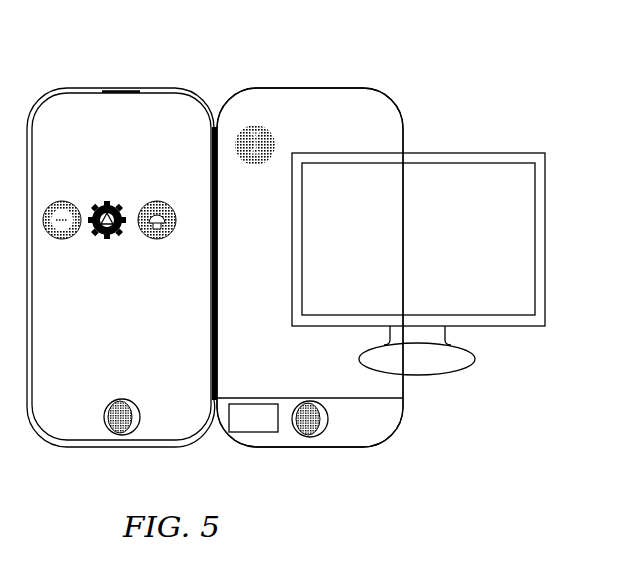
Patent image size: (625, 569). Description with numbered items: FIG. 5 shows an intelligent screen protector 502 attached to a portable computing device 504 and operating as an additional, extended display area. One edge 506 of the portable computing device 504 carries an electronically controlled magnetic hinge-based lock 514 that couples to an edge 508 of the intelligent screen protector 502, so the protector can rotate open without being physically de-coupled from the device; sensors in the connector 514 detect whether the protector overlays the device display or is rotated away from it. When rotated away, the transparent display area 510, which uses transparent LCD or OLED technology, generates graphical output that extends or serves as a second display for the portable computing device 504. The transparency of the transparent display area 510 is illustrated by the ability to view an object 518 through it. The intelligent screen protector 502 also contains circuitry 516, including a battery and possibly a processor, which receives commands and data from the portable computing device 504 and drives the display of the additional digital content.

The intelligent screen protector 502 is at (298, 88).
The portable computing device 504 is at (92, 88).
The edge of portable computing device 506 is at (212, 327).
The edge of the intelligent screen protector 508 is at (217, 357).
The transparent display area 510 is at (397, 132).
The electronically controlled magnetic hinge-based lock 514 is at (212, 137).
The circuitry 516 is at (258, 432).
The object 518 is at (455, 371).